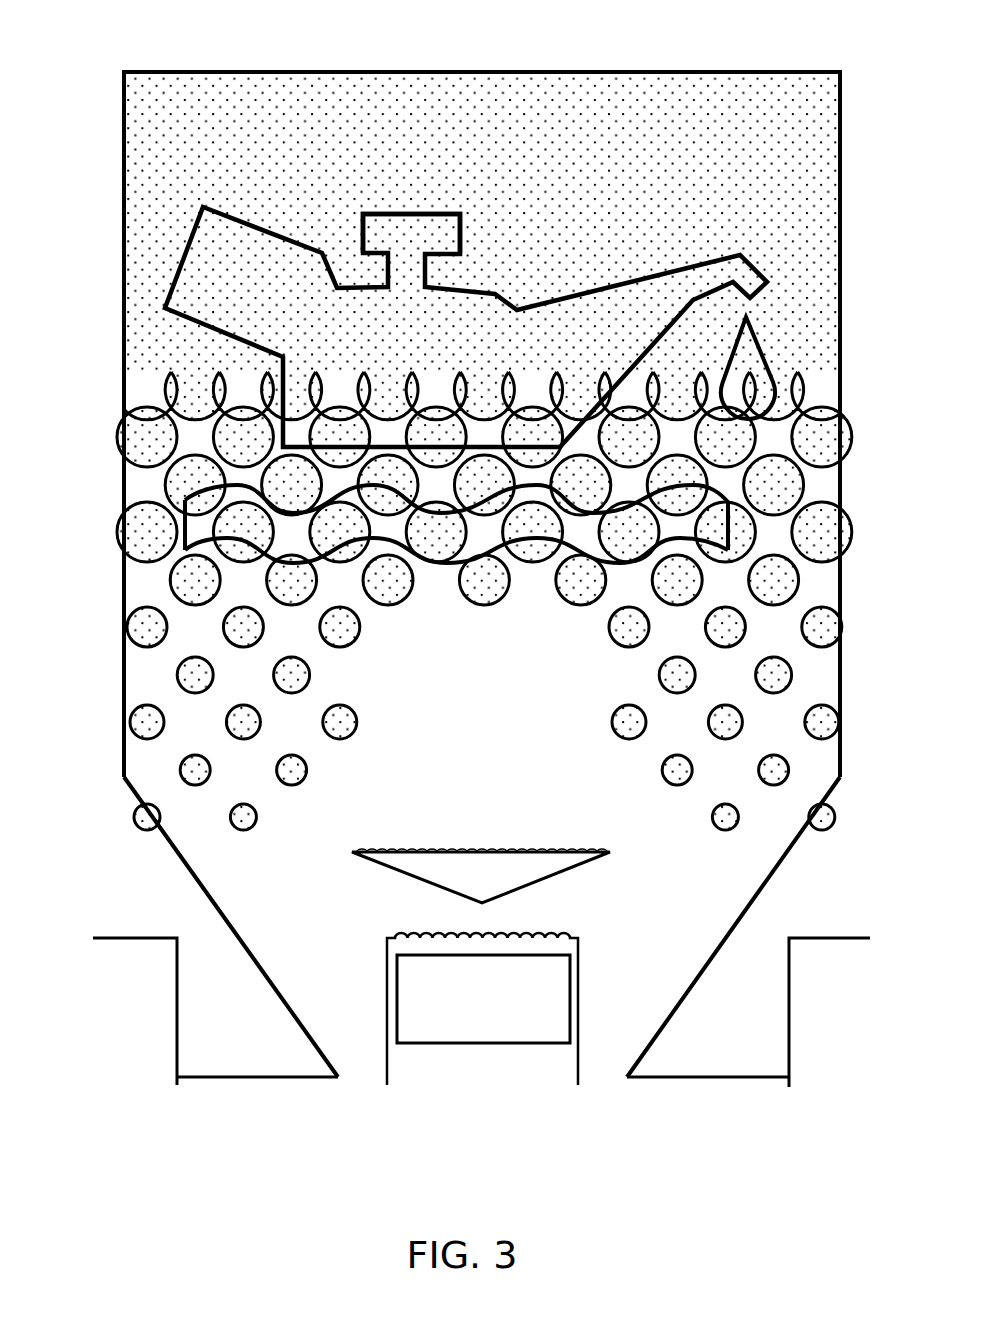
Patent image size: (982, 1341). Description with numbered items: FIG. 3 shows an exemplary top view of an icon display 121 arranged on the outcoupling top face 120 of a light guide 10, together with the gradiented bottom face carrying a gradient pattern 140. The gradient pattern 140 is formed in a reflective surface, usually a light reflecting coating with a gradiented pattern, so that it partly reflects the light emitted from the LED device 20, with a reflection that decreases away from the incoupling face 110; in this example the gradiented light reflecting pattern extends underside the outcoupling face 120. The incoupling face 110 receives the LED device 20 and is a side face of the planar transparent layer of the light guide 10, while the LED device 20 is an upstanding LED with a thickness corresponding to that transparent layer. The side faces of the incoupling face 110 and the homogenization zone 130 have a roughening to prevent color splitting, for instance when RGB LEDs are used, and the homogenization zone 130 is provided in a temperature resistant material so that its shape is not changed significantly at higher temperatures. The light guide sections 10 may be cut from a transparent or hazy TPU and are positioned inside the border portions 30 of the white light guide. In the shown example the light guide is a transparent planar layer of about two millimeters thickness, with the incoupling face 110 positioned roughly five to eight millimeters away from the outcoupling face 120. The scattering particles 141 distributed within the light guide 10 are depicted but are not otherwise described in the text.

The light guide 10 is at (469, 735).
The LED device 20 is at (483, 1028).
The border portions 30 is at (203, 1042).
The incoupling face 110 is at (401, 927).
The outcoupling top face 120 is at (231, 279).
The icon display 121 is at (358, 214).
The homogenization zone 130 is at (578, 867).
The gradient pattern 140 is at (607, 171).
The scattering particles 141 is at (288, 578).